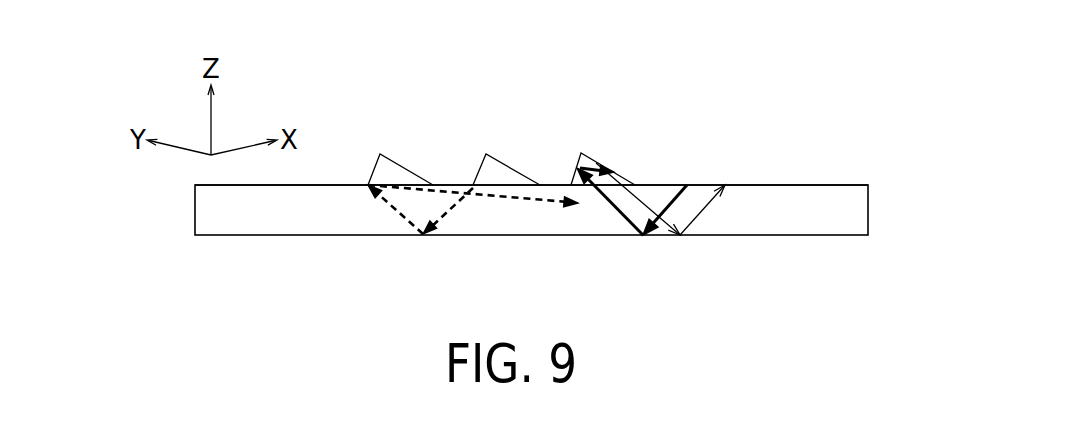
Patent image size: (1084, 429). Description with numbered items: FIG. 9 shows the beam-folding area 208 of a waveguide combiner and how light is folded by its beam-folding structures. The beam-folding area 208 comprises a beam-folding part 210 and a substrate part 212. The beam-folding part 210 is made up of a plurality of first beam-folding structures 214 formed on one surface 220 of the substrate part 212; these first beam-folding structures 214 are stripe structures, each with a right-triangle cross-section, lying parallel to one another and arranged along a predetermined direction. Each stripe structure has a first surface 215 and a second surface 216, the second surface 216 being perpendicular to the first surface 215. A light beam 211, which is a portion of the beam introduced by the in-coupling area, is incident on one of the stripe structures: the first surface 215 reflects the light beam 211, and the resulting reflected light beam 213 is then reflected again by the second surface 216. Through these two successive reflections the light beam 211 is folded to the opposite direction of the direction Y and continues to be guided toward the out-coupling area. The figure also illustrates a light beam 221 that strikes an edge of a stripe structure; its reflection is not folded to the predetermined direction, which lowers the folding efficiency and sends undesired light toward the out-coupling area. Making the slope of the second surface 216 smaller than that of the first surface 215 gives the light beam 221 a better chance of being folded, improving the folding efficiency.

The beam-folding area 208 is at (788, 88).
The beam-folding part 210 is at (375, 138).
The light beam 211 is at (618, 223).
The substrate part 212 is at (298, 208).
The light beam 213 is at (588, 170).
The first beam-folding structures 214 is at (395, 160).
The first surface 215 is at (577, 166).
The second surface 216 is at (600, 167).
The surface 220 is at (786, 185).
The light beam 221 is at (406, 221).